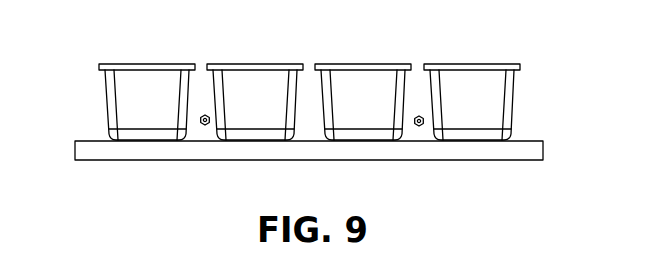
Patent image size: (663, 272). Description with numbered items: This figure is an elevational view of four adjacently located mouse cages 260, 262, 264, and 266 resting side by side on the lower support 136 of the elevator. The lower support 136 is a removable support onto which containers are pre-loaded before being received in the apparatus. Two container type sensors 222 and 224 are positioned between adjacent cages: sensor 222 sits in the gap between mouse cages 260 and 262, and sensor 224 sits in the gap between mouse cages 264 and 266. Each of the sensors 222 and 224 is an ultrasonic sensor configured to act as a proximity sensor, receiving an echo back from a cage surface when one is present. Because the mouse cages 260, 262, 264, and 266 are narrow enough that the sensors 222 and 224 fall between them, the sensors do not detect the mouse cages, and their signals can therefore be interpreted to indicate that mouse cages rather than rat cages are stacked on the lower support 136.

The lower support 136 is at (544, 147).
The mouse cage 260 is at (106, 100).
The mouse cage 262 is at (217, 142).
The mouse cage 264 is at (402, 142).
The mouse cage 266 is at (514, 104).
The container type sensor 222 is at (205, 113).
The container type sensor 224 is at (419, 114).